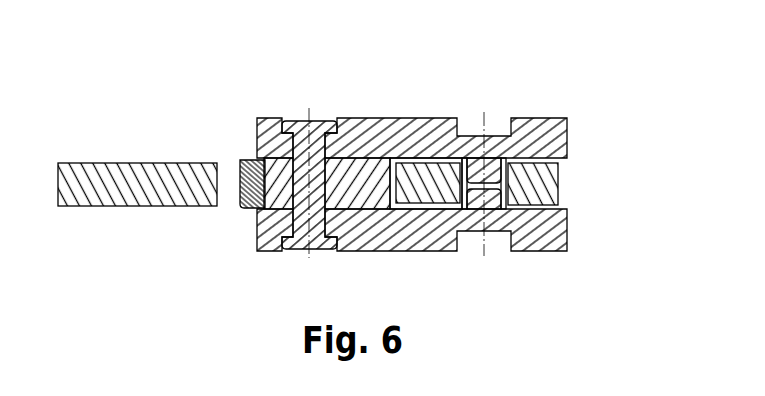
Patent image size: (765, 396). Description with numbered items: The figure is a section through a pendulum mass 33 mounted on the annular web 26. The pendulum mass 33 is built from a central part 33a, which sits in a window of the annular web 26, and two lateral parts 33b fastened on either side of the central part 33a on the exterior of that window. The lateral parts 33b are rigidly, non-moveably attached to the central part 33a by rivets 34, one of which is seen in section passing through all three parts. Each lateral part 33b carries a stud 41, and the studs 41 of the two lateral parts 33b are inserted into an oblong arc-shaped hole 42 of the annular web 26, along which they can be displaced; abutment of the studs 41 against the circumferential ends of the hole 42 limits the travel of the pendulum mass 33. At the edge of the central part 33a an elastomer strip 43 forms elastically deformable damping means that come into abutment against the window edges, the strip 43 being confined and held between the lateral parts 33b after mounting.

The annular web 26 is at (133, 177).
The pendulum mass 33 is at (417, 164).
The central part 33a is at (360, 172).
The lateral part 33b is at (411, 136).
The rivet 34 is at (302, 131).
The stud 41 is at (492, 171).
The oblong arc-shaped hole 42 is at (513, 192).
The elastomer strip 43 is at (257, 208).